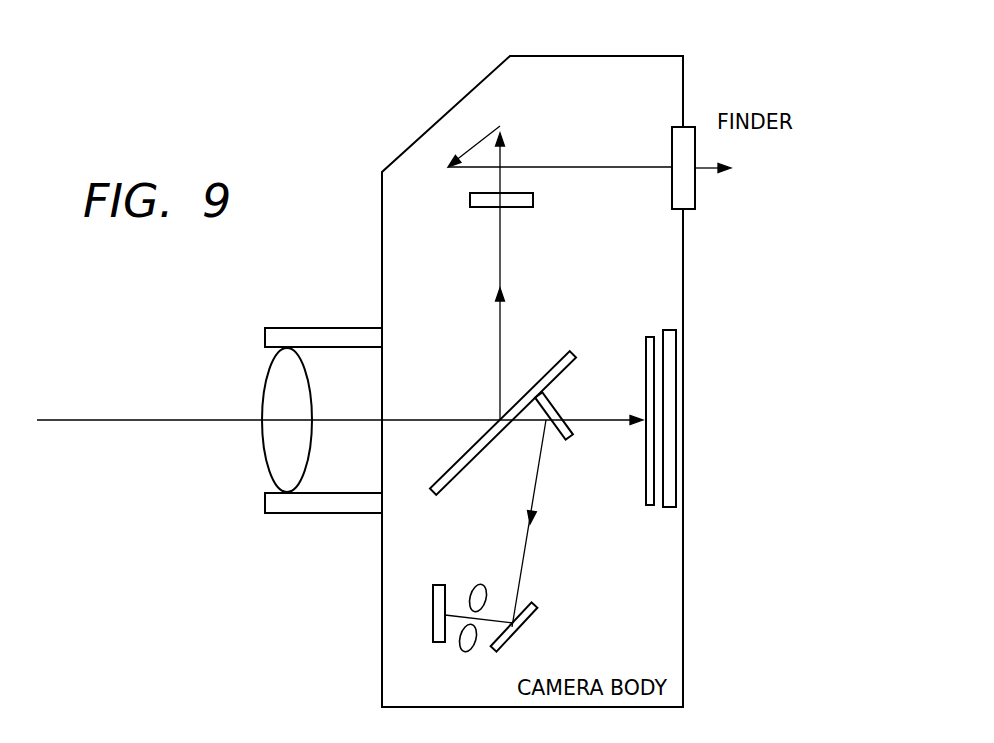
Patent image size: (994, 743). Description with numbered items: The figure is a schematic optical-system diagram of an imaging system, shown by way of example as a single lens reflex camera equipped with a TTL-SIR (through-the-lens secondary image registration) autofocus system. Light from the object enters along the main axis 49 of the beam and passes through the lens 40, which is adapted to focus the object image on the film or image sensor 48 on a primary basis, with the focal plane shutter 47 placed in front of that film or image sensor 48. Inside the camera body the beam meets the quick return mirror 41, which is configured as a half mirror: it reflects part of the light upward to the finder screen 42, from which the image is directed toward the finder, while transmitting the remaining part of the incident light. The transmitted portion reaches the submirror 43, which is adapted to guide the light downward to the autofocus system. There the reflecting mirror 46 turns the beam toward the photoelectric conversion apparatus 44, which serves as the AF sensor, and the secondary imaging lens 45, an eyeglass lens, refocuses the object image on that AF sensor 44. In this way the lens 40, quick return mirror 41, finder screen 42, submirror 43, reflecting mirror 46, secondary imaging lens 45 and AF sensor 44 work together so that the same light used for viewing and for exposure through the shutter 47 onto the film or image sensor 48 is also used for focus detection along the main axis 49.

The lens 40 is at (268, 466).
The quick return mirror 41 is at (556, 358).
The finder screen 42 is at (533, 197).
The submirror 43 is at (557, 405).
The photoelectric conversion apparatus 44 is at (433, 605).
The secondary imaging lens 45 is at (462, 652).
The reflecting mirror 46 is at (535, 628).
The focal plane shutter 47 is at (648, 506).
The film or image sensor 48 is at (668, 508).
The main axis of a beam 49 is at (100, 422).